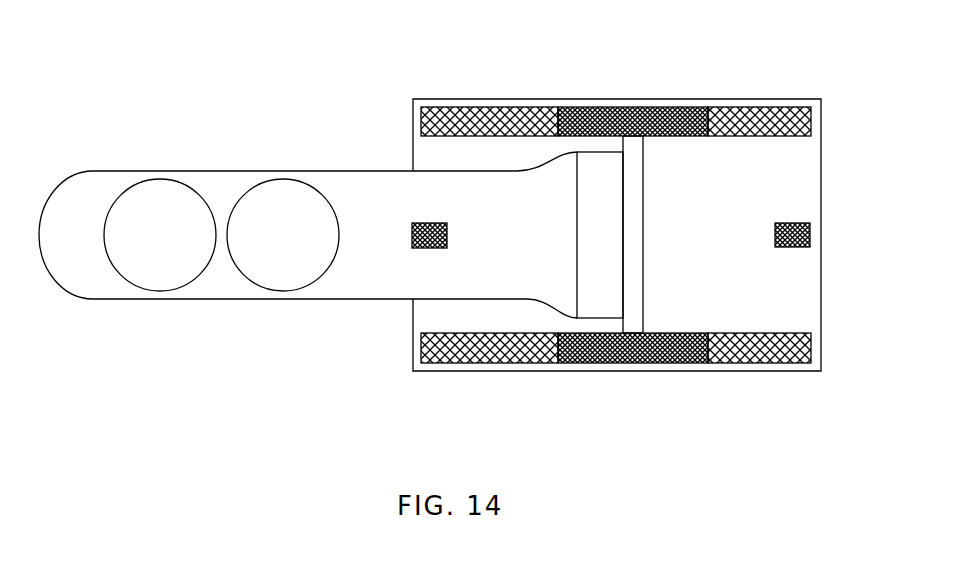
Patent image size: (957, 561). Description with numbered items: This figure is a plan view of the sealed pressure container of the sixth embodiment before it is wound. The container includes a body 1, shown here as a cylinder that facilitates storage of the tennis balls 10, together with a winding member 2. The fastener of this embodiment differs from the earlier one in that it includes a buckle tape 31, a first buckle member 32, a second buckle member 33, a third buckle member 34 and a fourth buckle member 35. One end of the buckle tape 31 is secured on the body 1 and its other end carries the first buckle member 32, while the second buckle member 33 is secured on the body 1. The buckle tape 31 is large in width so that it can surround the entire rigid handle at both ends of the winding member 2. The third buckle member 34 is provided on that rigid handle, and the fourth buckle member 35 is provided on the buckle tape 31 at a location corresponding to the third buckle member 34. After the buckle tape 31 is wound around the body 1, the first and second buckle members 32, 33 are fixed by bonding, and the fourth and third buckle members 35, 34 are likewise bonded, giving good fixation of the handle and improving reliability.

The body 1 is at (269, 175).
The tennis balls 10 is at (166, 192).
The winding member 2 is at (631, 214).
The buckle tape 31 is at (793, 187).
The first buckle member 32 is at (795, 248).
The second buckle member 33 is at (431, 223).
The third buckle member 34 is at (663, 363).
The fourth buckle member 35 is at (750, 112).